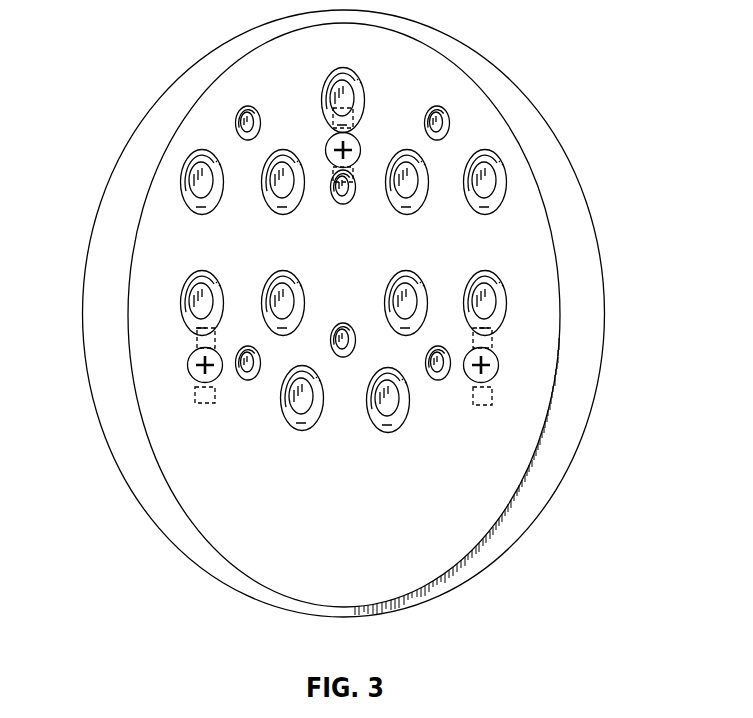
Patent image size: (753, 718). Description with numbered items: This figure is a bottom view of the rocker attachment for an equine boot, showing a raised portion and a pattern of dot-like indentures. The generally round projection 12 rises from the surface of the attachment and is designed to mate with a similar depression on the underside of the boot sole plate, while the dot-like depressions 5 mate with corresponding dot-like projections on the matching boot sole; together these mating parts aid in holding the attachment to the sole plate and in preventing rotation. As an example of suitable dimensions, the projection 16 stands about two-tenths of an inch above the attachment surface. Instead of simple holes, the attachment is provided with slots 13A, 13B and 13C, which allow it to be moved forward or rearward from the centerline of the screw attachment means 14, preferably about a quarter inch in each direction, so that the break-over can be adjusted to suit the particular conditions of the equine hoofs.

The dot-like depressions 5 is at (187, 310).
The round projection 12 is at (100, 387).
The attachment means 14 is at (187, 365).
The projection 16 is at (490, 98).
The slot 13A is at (492, 400).
The slot 13B is at (203, 400).
The slot 13C is at (318, 115).